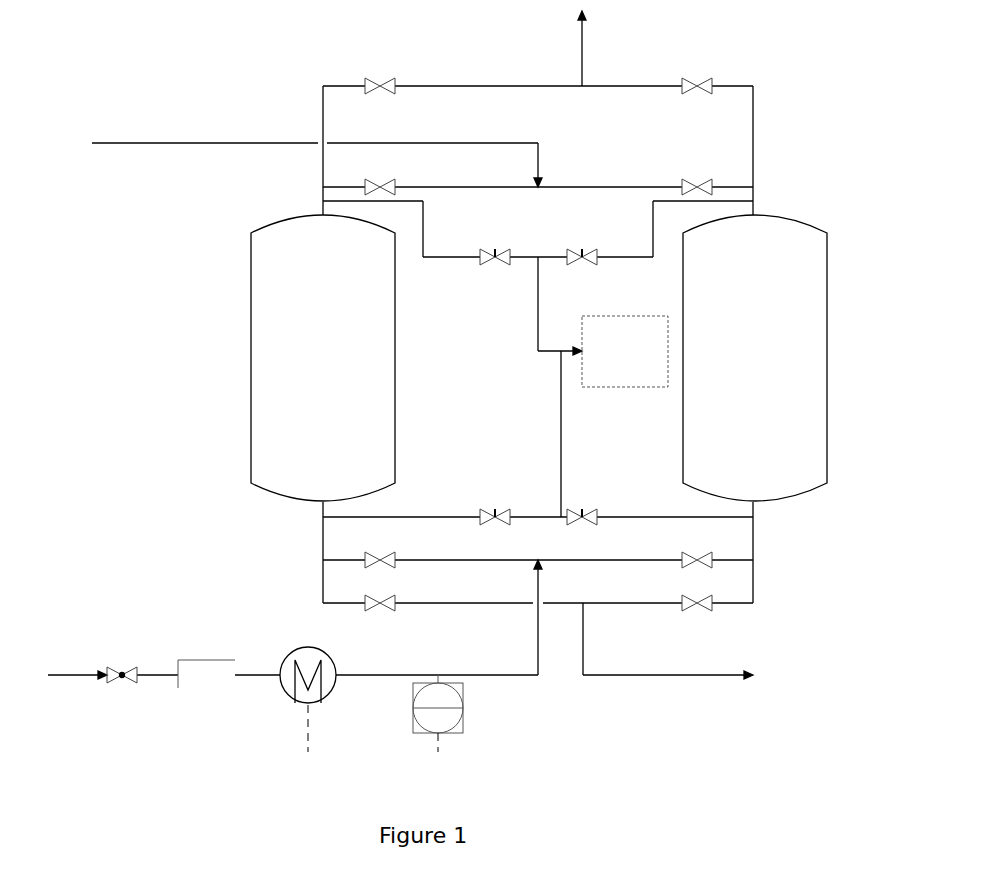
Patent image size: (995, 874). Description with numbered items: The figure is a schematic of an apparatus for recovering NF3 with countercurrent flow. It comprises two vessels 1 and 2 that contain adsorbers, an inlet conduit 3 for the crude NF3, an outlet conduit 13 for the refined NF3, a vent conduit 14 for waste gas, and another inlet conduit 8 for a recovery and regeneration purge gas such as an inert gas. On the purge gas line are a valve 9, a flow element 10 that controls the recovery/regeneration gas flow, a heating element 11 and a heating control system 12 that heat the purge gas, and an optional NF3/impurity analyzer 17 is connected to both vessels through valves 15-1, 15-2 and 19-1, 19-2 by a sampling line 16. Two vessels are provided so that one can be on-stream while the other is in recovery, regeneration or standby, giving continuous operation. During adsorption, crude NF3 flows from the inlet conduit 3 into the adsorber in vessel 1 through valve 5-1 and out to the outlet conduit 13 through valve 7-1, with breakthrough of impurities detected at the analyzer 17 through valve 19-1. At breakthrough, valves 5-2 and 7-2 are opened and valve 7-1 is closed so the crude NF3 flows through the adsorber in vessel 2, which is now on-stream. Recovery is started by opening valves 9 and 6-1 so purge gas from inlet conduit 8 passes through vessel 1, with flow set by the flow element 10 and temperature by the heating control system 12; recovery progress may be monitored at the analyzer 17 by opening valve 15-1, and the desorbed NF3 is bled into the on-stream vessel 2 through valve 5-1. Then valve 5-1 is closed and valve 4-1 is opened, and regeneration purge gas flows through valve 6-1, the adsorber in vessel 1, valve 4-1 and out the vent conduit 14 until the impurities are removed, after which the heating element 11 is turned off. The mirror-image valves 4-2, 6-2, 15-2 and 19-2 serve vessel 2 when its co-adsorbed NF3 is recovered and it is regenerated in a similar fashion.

The vessel 1 is at (323, 358).
The vessel 2 is at (755, 358).
The inlet conduit 3 is at (304, 138).
The valve 4-1 is at (382, 102).
The valve 4-2 is at (699, 102).
The valve 5-1 is at (382, 176).
The valve 5-2 is at (699, 176).
The valve 6-1 is at (382, 548).
The valve 6-2 is at (699, 548).
The valve 7-1 is at (382, 620).
The valve 7-2 is at (699, 620).
The inlet conduit 8 is at (74, 663).
The valve 9 is at (122, 692).
The flow element 10 is at (206, 694).
The heating element 11 is at (308, 685).
The heating control system 12 is at (438, 713).
The outlet conduit 13 is at (692, 665).
The vent conduit 14 is at (607, 45).
The valve 15-1 is at (498, 274).
The valve 15-2 is at (585, 274).
The sampling line 16 is at (547, 387).
The NF3/impurity analyzer 17 is at (629, 351).
The valve 19-1 is at (498, 530).
The valve 19-2 is at (585, 530).